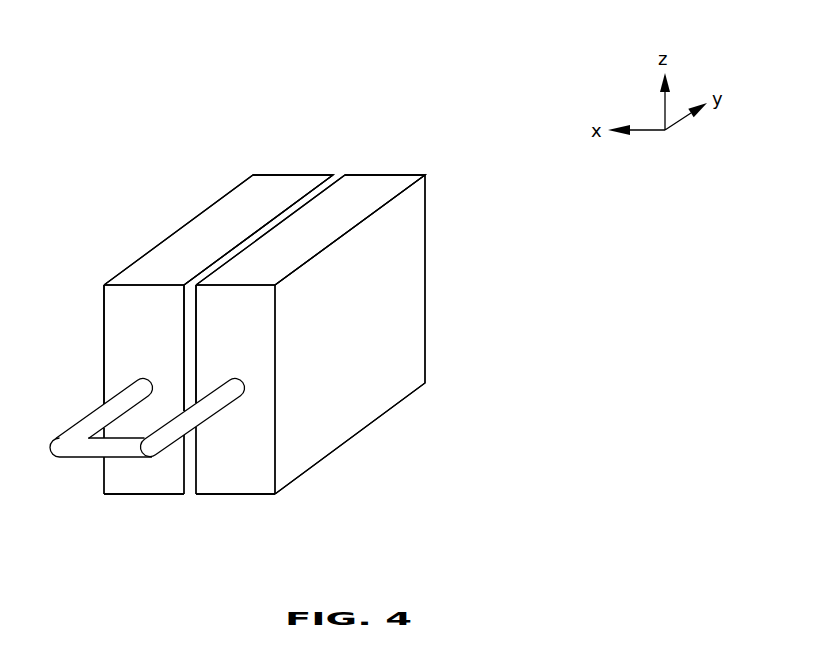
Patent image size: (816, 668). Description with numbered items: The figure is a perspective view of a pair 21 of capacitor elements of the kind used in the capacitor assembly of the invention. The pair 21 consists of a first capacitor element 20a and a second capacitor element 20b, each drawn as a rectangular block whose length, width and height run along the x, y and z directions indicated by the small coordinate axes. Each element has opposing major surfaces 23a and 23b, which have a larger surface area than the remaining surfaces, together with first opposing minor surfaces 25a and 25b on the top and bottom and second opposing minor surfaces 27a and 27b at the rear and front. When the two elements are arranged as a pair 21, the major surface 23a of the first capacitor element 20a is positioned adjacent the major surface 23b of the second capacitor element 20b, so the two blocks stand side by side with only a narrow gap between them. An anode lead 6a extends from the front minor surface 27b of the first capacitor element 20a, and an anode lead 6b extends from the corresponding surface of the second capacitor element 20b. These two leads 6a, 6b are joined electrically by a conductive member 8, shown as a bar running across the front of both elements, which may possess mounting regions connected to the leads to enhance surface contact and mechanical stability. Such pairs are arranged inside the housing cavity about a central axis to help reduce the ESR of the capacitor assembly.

The pair of capacitor elements 21 is at (330, 90).
The first capacitor element 20a is at (155, 185).
The second capacitor element 20b is at (460, 200).
The first opposing minor surface 25a is at (218, 250).
The first opposing minor surface 25b is at (145, 495).
The second opposing minor surface 27a is at (295, 175).
The second opposing minor surface 27b is at (158, 320).
The major surface 23a is at (183, 368).
The major surface 23b is at (103, 335).
The anode lead 6a is at (85, 425).
The anode lead 6b is at (202, 412).
The conductive member 8 is at (92, 458).